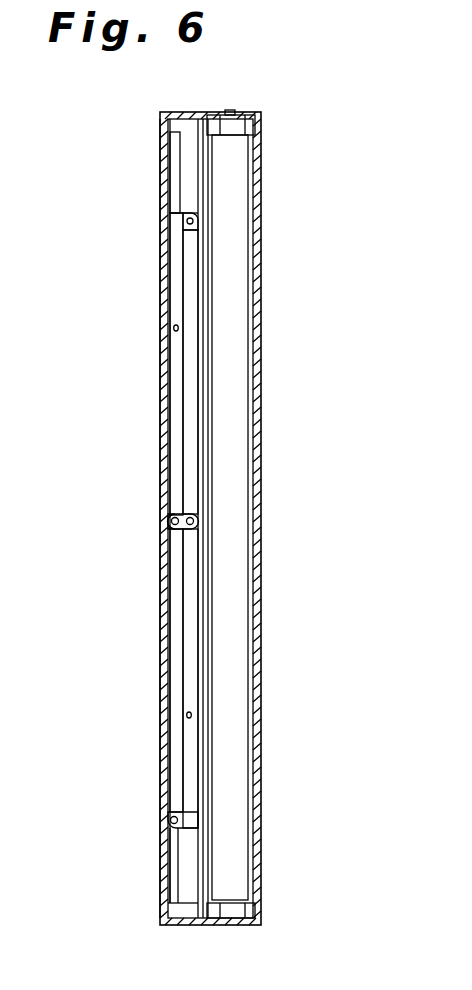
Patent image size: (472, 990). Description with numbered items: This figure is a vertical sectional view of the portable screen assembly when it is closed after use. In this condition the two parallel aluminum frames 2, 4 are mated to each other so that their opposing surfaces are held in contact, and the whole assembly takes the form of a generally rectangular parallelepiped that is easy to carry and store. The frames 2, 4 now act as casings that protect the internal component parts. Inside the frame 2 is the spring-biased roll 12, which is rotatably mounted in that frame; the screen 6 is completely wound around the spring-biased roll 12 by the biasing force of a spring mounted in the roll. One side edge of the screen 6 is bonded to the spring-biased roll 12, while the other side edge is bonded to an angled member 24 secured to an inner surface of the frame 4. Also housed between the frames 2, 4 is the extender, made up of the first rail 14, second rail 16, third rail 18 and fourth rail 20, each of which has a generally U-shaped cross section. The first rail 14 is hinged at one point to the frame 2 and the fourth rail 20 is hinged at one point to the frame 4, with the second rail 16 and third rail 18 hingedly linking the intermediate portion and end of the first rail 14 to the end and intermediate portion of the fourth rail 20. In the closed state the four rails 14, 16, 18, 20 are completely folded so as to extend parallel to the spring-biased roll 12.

The frame 2 is at (258, 467).
The frame 4 is at (158, 427).
The screen 6 is at (178, 168).
The spring-biased roll 12 is at (237, 303).
The first rail 14 is at (188, 632).
The second rail 16 is at (192, 392).
The third rail 18 is at (176, 602).
The fourth rail 20 is at (176, 278).
The angled member 24 is at (170, 197).